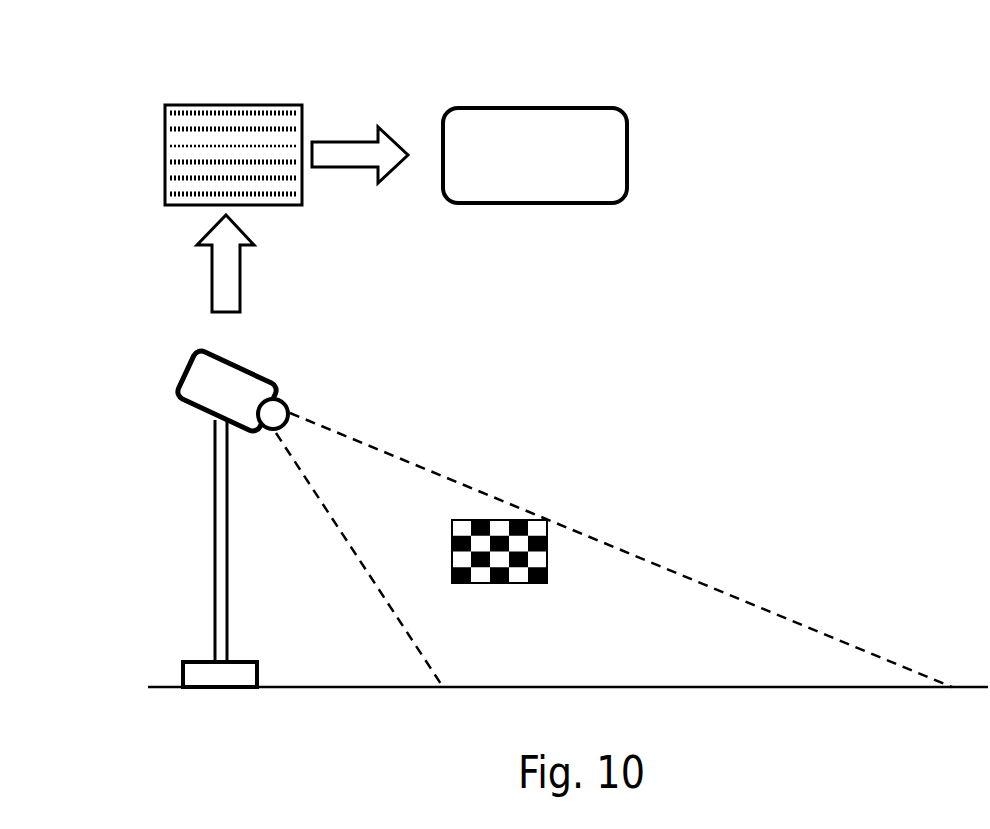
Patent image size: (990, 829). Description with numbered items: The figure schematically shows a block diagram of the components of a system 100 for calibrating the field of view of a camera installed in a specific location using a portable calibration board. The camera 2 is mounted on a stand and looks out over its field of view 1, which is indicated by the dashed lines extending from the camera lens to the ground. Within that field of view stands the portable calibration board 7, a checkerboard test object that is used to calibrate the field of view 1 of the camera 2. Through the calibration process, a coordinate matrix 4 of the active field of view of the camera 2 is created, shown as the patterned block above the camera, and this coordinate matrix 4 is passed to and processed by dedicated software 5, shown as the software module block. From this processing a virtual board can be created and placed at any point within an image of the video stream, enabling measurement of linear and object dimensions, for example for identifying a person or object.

The system 100 is at (858, 147).
The field of view 1 is at (651, 647).
The camera 2 is at (183, 370).
The coordinate matrix 4 is at (165, 152).
The dedicated software 5 is at (627, 162).
The portable calibration board 7 is at (517, 520).